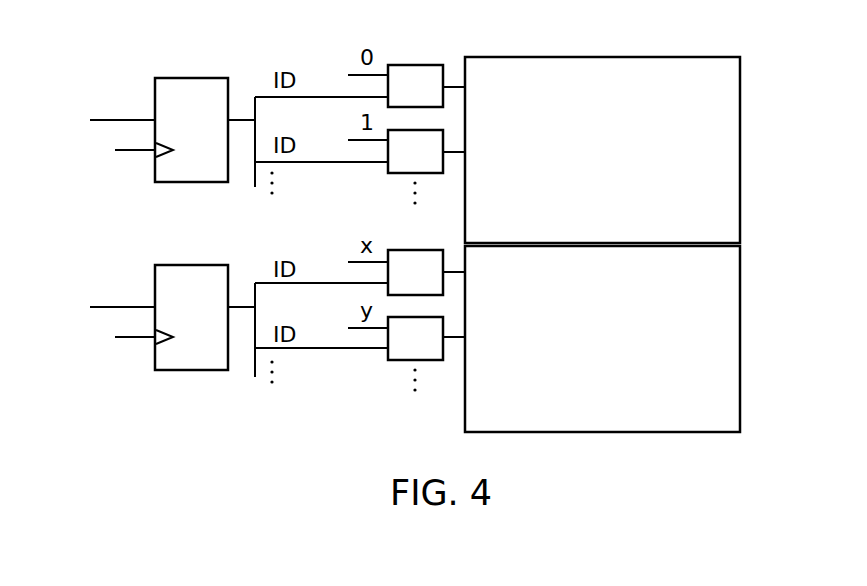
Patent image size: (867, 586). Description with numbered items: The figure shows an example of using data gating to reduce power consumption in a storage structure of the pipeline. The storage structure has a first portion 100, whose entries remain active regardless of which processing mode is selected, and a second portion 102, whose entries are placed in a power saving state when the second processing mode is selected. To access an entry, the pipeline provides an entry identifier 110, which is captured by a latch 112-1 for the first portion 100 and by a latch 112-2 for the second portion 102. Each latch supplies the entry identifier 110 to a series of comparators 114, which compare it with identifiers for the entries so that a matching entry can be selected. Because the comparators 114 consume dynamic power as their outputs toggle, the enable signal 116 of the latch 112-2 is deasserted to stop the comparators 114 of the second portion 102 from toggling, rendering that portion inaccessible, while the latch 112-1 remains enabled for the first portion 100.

The first portion 100 is at (742, 147).
The second portion 102 is at (742, 335).
The entry identifier 110 is at (112, 118).
The latch 112-1 is at (220, 57).
The latch 112-2 is at (220, 245).
The comparators 114 is at (403, 65).
The enable signal 116 is at (117, 338).